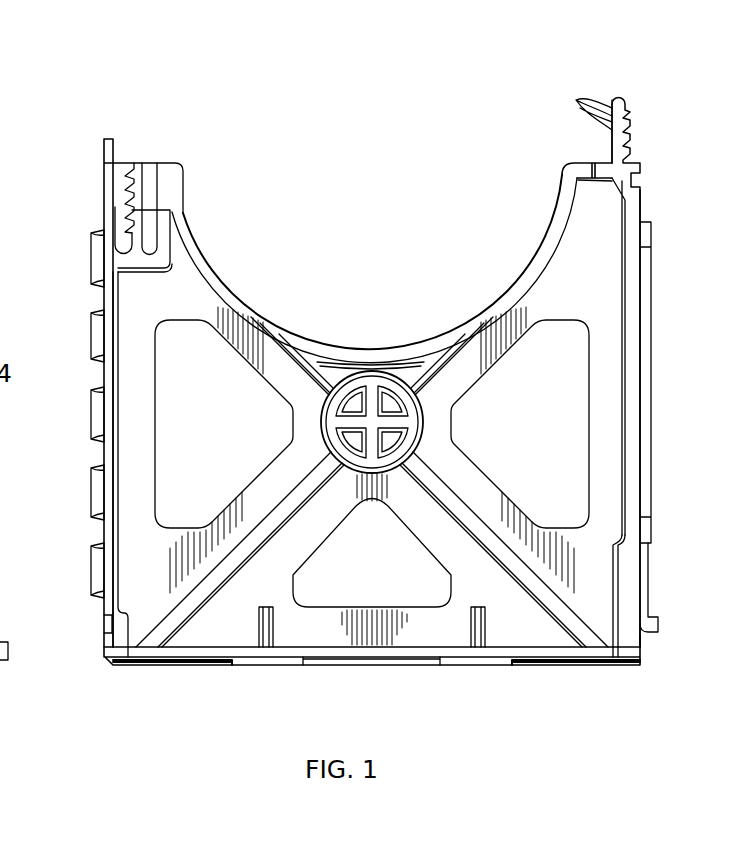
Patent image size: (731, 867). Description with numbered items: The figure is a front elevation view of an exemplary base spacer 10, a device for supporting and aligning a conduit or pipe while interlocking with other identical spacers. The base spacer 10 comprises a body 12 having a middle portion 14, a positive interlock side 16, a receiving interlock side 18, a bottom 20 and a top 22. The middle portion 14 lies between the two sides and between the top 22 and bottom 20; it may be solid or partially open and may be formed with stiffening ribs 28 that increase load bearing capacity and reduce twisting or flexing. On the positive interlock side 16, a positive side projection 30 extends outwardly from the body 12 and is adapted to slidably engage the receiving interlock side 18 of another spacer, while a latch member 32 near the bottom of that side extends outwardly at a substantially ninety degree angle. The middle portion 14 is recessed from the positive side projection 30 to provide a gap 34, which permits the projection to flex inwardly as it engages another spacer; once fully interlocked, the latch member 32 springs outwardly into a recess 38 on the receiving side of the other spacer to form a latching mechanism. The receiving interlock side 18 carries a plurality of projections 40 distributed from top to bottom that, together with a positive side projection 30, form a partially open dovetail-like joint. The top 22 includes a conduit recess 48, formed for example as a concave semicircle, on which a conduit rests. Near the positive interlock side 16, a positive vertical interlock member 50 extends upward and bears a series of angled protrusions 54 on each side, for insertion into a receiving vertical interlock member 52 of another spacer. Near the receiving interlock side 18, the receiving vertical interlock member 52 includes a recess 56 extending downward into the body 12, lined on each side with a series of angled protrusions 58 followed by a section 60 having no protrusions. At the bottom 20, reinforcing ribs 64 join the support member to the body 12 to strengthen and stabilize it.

The base spacer 10 is at (446, 190).
The body 12 is at (546, 671).
The middle portion 14 is at (292, 424).
The positive interlock side 16 is at (654, 353).
The receiving interlock side 18 is at (90, 303).
The bottom 20 is at (358, 666).
The top 22 is at (372, 335).
The stiffening ribs 28 is at (190, 607).
The positive side projection 30 is at (645, 428).
The latch member 32 is at (655, 626).
The gap 34 is at (641, 637).
The recess 38 is at (104, 626).
The receiving side projections 40 is at (98, 415).
The conduit recess 48 is at (262, 307).
The positive vertical interlock member 50 is at (638, 128).
The receiving vertical interlock member 52 is at (126, 158).
The angled protrusions 54 is at (578, 100).
The recess 56 is at (122, 228).
The angled protrusions 58 is at (148, 160).
The section 60 is at (134, 232).
The reinforcing ribs 64 is at (267, 606).